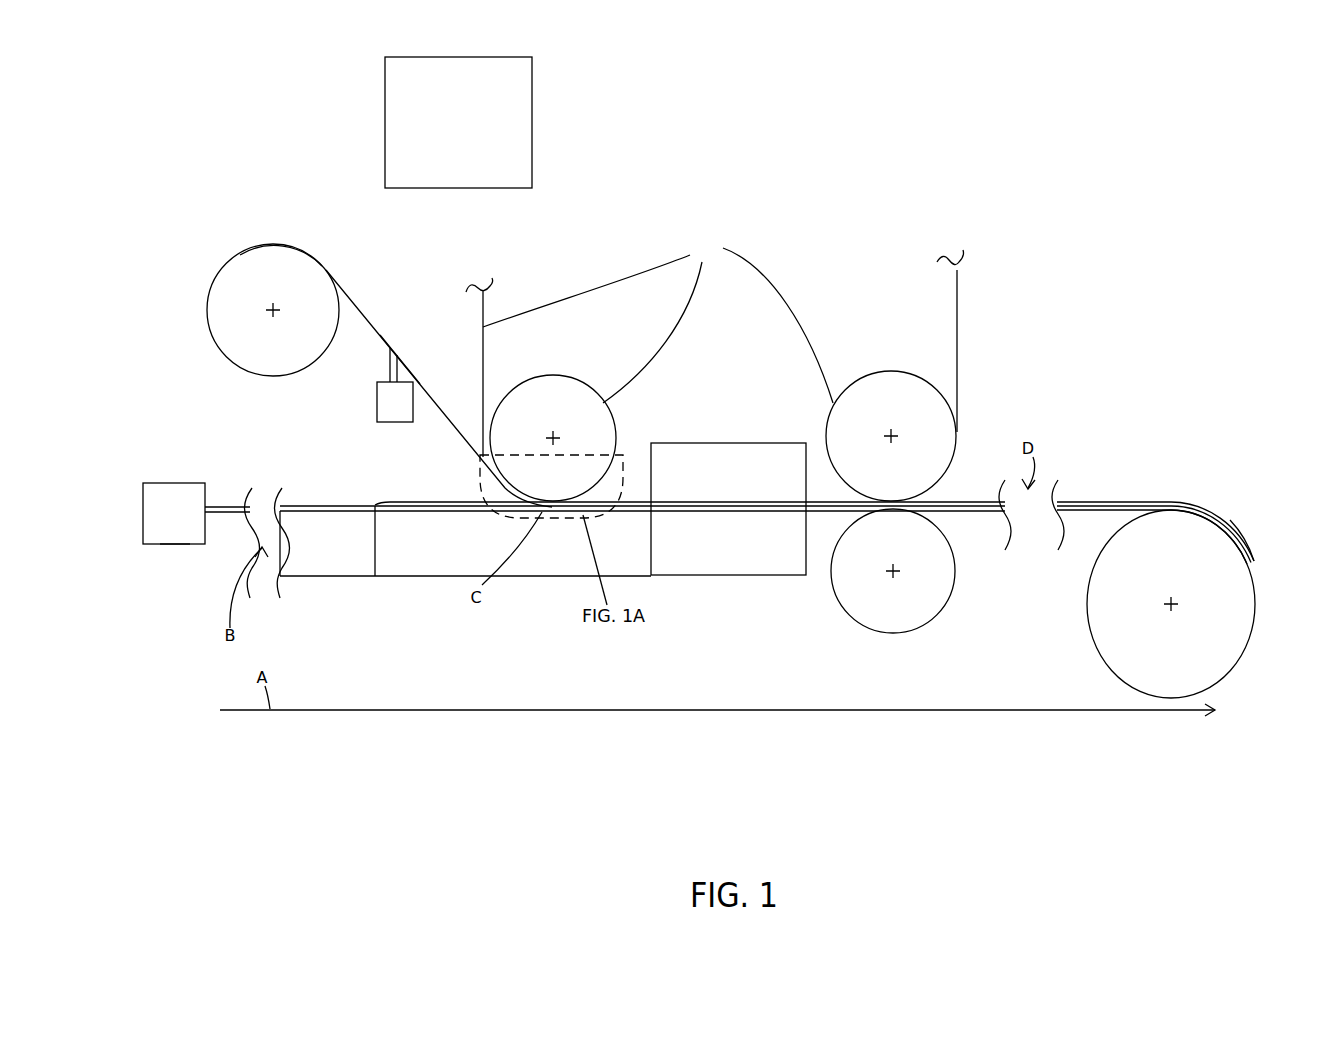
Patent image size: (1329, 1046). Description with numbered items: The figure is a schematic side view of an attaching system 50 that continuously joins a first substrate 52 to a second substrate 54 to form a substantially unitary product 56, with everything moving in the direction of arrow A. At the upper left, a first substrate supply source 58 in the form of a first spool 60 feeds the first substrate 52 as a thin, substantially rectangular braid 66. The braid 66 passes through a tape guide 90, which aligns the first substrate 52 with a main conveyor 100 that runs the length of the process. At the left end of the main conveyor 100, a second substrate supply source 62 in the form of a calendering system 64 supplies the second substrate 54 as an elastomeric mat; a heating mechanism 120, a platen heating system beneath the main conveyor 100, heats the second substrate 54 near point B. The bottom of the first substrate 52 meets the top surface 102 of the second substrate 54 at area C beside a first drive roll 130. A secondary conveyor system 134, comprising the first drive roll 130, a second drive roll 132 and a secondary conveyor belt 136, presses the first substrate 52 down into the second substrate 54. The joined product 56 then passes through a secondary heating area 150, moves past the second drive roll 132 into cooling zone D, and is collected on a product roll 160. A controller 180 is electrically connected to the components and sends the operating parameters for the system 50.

The attaching system 50 is at (1050, 182).
The first substrate 52 is at (382, 334).
The second substrate 54 is at (328, 502).
The unitary product 56 is at (1200, 504).
The first substrate supply source 58 is at (222, 310).
The first spool 60 is at (282, 243).
The second substrate supply source 62 is at (182, 495).
The calendering system 64 is at (190, 545).
The rectangular braid 66 is at (357, 307).
The tape guide 90 is at (400, 392).
The main conveyor 100 is at (375, 576).
The top surface of the second substrate 102 is at (423, 503).
The heating mechanism 120 is at (312, 547).
The first drive roll 130 is at (562, 400).
The second drive roll 132 is at (872, 392).
The secondary conveyor system 134 is at (658, 321).
The secondary conveyor belt 136 is at (483, 358).
The secondary heating area 150 is at (700, 458).
The product roll 160 is at (1232, 567).
The controller 180 is at (498, 82).